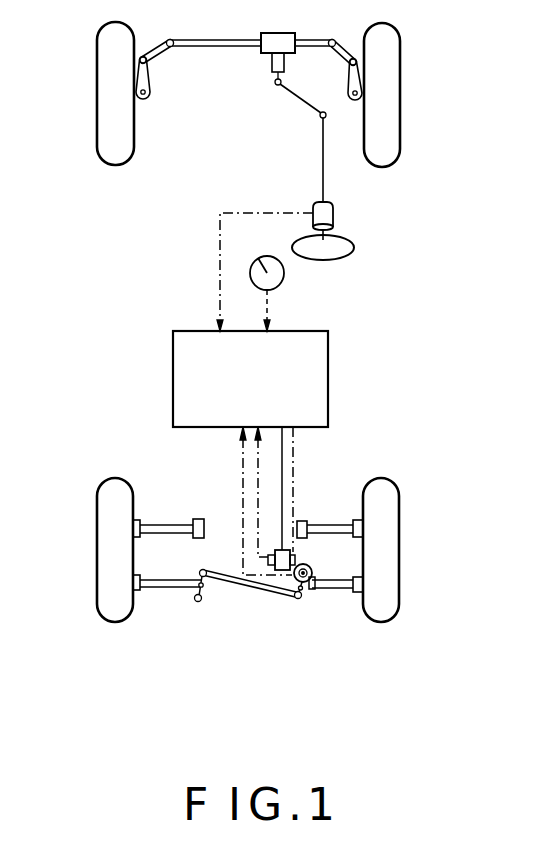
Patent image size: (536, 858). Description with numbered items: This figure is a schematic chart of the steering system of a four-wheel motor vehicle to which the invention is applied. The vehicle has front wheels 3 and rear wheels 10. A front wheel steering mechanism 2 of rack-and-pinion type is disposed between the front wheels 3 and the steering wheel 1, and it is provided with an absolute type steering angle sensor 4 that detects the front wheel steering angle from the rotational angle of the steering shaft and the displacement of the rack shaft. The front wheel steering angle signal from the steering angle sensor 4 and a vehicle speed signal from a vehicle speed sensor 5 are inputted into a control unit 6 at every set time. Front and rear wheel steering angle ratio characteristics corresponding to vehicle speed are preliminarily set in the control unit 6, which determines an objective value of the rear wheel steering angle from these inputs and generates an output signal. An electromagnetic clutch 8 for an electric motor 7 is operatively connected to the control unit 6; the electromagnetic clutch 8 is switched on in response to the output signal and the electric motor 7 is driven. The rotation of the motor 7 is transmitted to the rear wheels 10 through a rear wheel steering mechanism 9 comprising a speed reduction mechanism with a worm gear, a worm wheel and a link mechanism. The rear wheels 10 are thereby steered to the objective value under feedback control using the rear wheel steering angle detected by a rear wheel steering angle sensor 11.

The steering wheel 1 is at (347, 258).
The front wheel steering mechanism 2 is at (255, 60).
The front wheels 3 is at (97, 100).
The steering angle sensor 4 is at (333, 213).
The vehicle speed sensor 5 is at (280, 280).
The control unit 6 is at (328, 375).
The electric motor 7 is at (282, 568).
The electromagnetic clutch 8 is at (295, 552).
The rear wheel steering mechanism 9 is at (237, 590).
The rear wheels 10 is at (97, 553).
The rear wheel steering angle sensor 11 is at (313, 573).